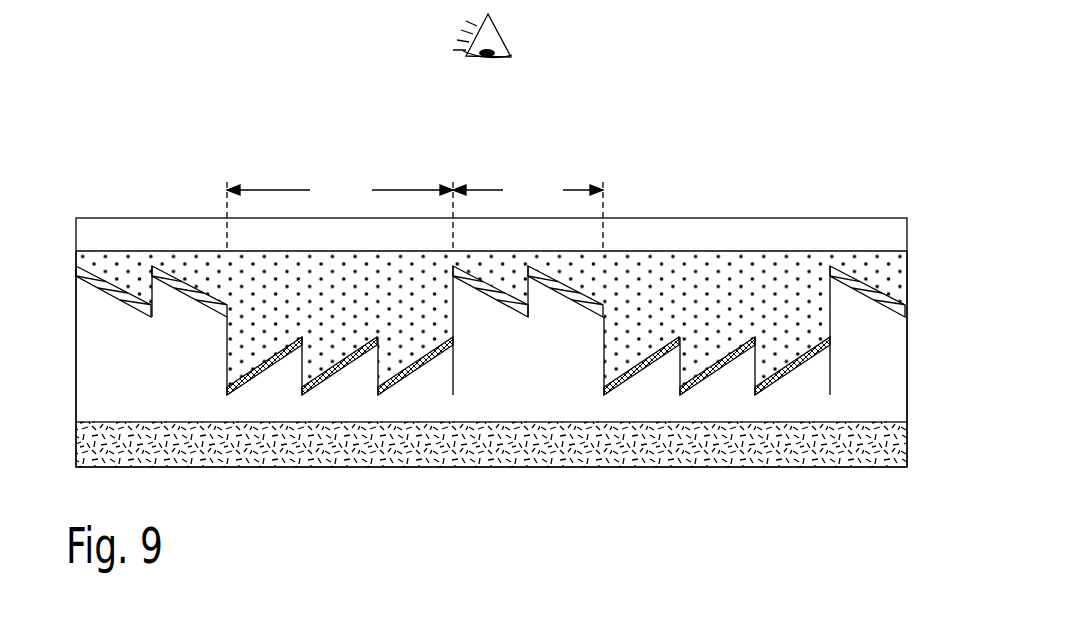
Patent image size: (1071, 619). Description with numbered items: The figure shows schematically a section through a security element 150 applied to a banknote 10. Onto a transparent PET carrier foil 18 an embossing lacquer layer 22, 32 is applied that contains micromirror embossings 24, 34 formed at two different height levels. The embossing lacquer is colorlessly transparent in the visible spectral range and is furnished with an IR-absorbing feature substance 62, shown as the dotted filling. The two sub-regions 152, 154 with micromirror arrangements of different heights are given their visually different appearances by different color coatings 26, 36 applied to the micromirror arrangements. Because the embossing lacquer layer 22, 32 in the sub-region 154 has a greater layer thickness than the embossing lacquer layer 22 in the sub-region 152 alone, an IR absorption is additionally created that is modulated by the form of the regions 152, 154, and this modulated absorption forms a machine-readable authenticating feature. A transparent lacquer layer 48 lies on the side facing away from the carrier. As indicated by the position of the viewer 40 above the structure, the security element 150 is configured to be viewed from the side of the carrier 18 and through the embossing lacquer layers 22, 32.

The banknote 10 is at (900, 445).
The transparent PET carrier foil 18 is at (895, 235).
The embossing lacquer layer 22 is at (895, 275).
The micromirror embossings 24 is at (857, 279).
The color coating 26 is at (512, 305).
The embossing lacquer layer 32 is at (242, 341).
The micromirror embossings 34 is at (795, 360).
The color coating 36 is at (413, 378).
The viewer 40 is at (497, 31).
The transparent lacquer layer 48 is at (895, 368).
The IR-absorbing feature substance 62 is at (688, 277).
The security element 150 is at (138, 182).
The sub-region 152 is at (528, 211).
The sub-region 154 is at (340, 211).